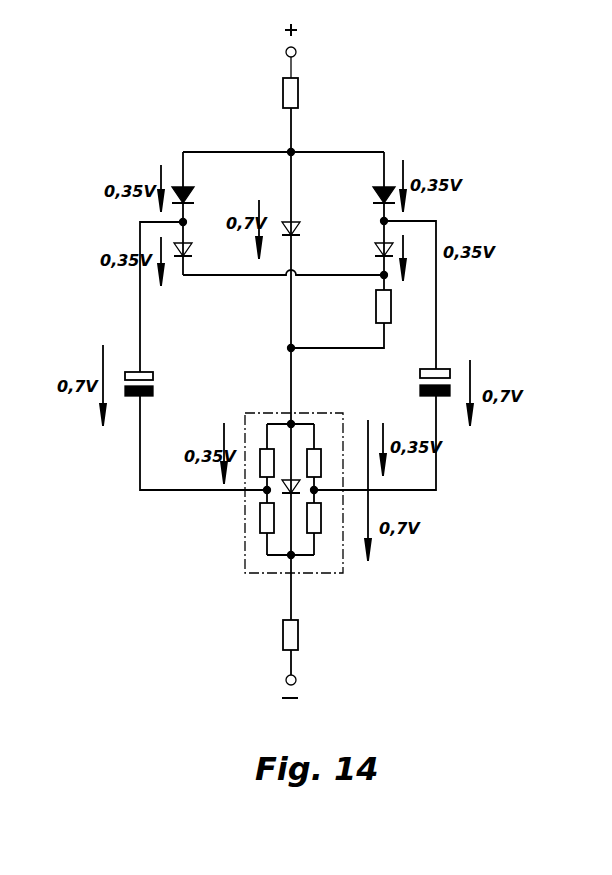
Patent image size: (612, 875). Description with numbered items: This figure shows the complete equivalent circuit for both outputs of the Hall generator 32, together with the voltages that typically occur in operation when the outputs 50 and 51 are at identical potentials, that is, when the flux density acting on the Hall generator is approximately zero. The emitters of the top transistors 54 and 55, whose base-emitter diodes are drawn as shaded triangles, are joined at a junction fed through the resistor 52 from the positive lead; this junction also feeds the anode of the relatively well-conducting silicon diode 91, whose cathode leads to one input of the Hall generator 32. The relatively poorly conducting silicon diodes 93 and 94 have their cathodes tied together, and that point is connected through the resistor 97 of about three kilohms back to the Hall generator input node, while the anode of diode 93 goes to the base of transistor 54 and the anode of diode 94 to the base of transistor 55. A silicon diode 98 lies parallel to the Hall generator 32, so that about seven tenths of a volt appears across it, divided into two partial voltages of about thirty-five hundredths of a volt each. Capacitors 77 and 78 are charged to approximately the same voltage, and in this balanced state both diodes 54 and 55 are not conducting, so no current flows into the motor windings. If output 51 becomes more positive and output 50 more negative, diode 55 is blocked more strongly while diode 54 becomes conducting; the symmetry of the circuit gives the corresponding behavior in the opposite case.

The resistor 52 is at (298, 92).
The transistor 54 is at (194, 196).
The transistor 55 is at (372, 195).
The silicon diode 91 is at (300, 229).
The silicon diode 93 is at (192, 251).
The silicon diode 94 is at (375, 251).
The resistor 97 is at (375, 310).
The capacitor 77 is at (153, 378).
The capacitor 78 is at (419, 384).
The output of Hall generator 50 is at (168, 490).
The output of Hall generator 51 is at (412, 490).
The silicon diode 98 is at (297, 492).
The Hall generator 32 is at (311, 516).